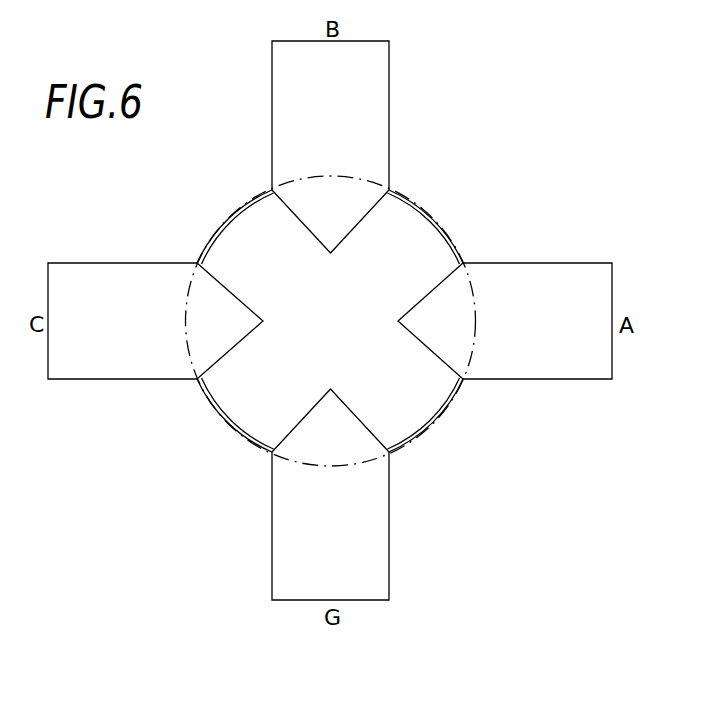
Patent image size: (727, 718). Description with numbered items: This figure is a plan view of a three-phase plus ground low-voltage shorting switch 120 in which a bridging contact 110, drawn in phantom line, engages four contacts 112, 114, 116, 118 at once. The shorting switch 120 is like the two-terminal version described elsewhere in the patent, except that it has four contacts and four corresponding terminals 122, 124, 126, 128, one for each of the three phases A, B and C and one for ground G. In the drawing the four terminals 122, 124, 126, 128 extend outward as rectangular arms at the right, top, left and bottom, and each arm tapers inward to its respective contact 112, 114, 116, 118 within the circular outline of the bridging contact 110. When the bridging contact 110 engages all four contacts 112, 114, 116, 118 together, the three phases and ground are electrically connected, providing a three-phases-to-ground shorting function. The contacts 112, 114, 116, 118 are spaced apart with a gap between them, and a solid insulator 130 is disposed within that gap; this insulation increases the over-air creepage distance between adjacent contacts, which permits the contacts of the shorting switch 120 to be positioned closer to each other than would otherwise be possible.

The bridging contact 110 is at (422, 432).
The contact 112 is at (437, 342).
The contact 114 is at (350, 215).
The contact 116 is at (223, 303).
The contact 118 is at (312, 428).
The shorting switch 120 is at (541, 557).
The terminal 122 is at (575, 367).
The terminal 124 is at (378, 78).
The terminal 126 is at (83, 273).
The terminal 128 is at (283, 564).
The solid insulator 130 is at (436, 240).